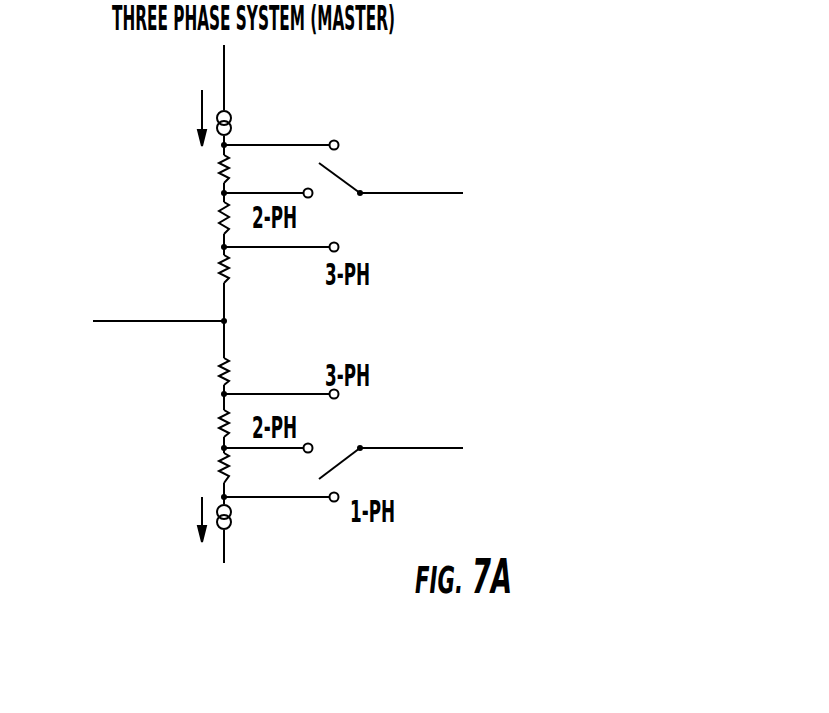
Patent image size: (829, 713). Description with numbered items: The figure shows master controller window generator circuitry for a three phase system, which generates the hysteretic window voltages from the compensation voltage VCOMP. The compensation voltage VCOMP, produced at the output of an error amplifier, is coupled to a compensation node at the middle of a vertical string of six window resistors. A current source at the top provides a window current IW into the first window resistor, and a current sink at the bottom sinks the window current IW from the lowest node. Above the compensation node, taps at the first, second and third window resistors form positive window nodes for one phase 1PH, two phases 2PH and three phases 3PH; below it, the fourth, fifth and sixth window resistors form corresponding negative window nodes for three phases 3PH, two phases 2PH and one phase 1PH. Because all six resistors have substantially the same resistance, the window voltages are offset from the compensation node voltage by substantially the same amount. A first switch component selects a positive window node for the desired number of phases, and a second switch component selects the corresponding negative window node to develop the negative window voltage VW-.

The window current IW is at (236, 321).
The positive and negative window nodes for the first phase 1PH is at (309, 314).
The second positive and second negative window nodes for the second phase 2PH is at (268, 321).
The third positive and negative window nodes for the third phase 3PH is at (281, 321).
The compensation voltage VCOMP is at (154, 299).
The negative window voltage VW- is at (412, 453).